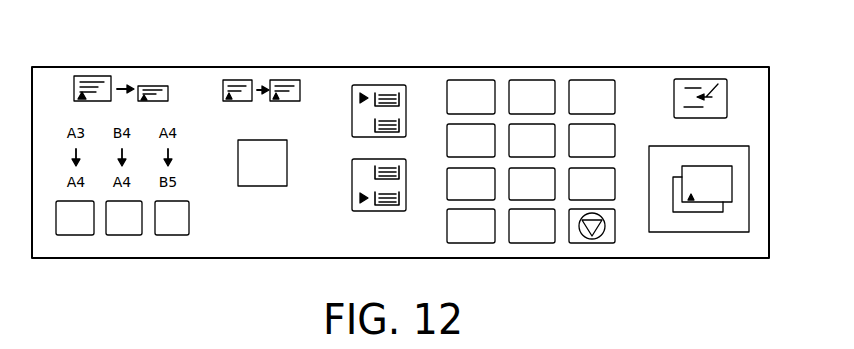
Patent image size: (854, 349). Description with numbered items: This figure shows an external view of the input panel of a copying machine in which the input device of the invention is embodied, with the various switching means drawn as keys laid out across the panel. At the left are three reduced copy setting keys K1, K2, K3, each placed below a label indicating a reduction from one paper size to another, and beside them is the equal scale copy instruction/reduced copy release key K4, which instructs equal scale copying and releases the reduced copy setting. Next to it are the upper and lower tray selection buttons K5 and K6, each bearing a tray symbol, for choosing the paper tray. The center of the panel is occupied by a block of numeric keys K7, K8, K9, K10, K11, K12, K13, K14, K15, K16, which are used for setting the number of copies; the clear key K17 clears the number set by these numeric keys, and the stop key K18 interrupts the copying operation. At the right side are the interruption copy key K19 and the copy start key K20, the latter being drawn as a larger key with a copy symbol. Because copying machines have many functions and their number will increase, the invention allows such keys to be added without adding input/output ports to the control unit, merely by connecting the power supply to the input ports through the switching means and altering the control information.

The reduced copy setting key K1 is at (81, 236).
The reduced copy setting key K2 is at (127, 236).
The reduced copy setting key K3 is at (172, 236).
The equal scale copy instruction/reduced copy release key K4 is at (276, 187).
The upper tray selection button K5 is at (352, 111).
The lower tray selection button K6 is at (390, 212).
The numeric key K7 is at (462, 80).
The numeric key K8 is at (530, 80).
The numeric key K9 is at (612, 80).
The numeric key K10 is at (447, 143).
The numeric key K11 is at (557, 123).
The numeric key K12 is at (613, 124).
The numeric key K13 is at (447, 190).
The numeric key K14 is at (553, 197).
The numeric key K15 is at (617, 168).
The numeric key K16 is at (480, 243).
The clear key K17 is at (530, 243).
The stop key K18 is at (600, 243).
The interruption copy key K19 is at (712, 79).
The copy start key K20 is at (693, 232).